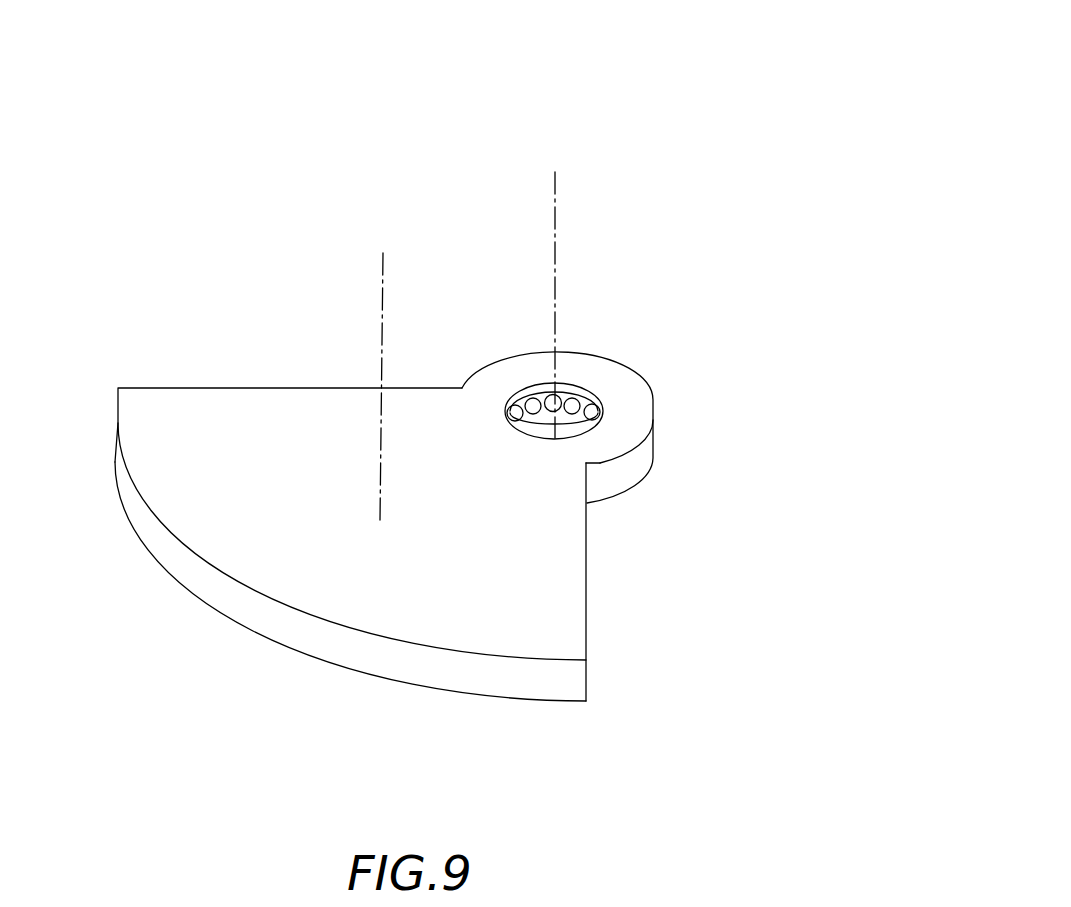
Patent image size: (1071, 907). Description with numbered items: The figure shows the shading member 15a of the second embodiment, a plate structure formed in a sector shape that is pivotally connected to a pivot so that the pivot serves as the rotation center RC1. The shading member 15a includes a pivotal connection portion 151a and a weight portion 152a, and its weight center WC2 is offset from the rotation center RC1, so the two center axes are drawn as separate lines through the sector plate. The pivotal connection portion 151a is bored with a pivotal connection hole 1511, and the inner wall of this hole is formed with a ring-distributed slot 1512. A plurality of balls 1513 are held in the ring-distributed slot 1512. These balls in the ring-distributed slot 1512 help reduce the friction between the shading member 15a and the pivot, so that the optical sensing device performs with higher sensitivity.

The shading member 15a is at (652, 135).
The weight portion 152a is at (182, 402).
The pivotal connection portion 151a is at (613, 378).
The balls 1513 is at (600, 411).
The ring-distributed slot 1512 is at (597, 419).
The pivotal connection hole 1511 is at (565, 433).
The rotation center RC1 is at (556, 330).
The weight center WC2 is at (383, 373).